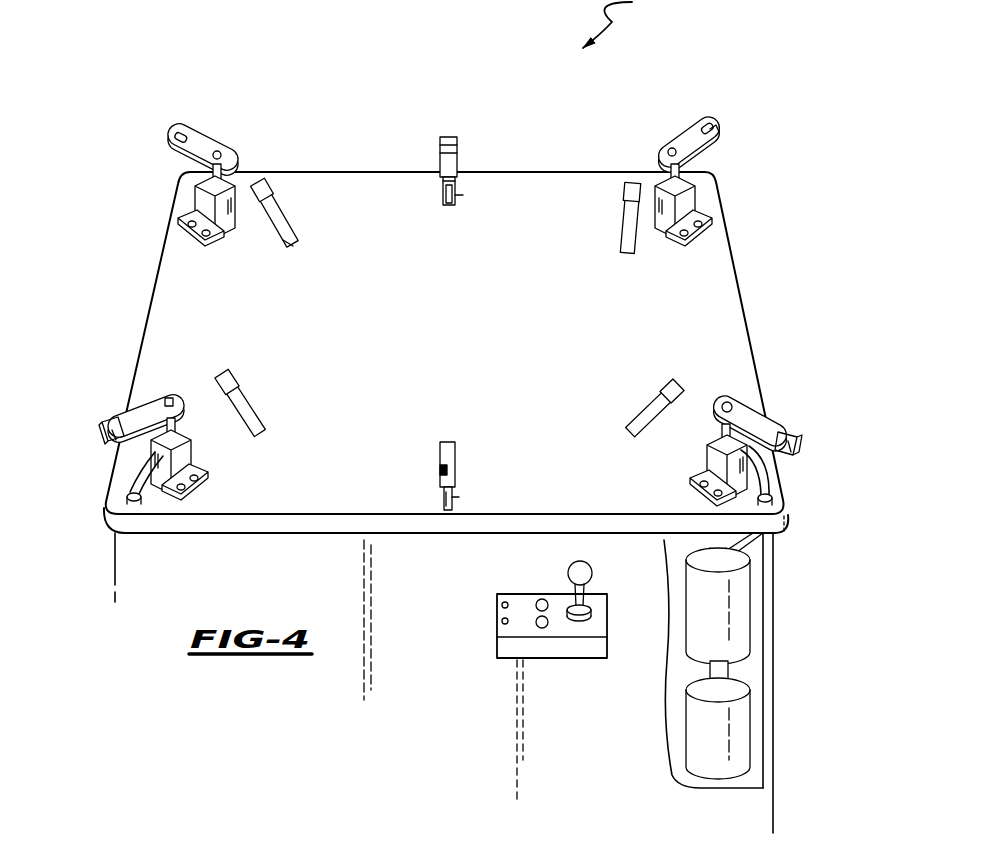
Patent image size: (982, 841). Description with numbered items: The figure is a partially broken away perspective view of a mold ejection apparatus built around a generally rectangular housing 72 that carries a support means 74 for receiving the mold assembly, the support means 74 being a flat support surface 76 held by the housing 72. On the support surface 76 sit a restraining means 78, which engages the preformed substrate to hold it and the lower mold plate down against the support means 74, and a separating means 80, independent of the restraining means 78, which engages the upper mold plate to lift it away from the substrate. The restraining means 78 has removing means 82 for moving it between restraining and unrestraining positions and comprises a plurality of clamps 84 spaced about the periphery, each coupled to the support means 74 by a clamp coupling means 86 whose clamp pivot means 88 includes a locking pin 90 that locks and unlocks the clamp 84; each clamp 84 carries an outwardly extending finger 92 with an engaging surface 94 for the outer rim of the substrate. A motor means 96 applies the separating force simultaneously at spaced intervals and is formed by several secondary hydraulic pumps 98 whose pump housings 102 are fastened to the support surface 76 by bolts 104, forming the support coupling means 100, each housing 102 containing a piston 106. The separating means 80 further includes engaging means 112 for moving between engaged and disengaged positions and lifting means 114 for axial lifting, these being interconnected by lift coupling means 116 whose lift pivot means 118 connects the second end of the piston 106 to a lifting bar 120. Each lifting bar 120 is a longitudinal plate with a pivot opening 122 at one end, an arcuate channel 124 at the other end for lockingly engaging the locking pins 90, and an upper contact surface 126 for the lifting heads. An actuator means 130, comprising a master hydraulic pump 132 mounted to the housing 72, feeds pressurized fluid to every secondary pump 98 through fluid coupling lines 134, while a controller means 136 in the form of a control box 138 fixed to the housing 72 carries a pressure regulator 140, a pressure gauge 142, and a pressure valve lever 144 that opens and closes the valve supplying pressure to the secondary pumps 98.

The housing 72 is at (112, 560).
The support means 74 is at (140, 332).
The support surface 76 is at (452, 370).
The restraining means 78 is at (484, 188).
The separating means 80 is at (729, 161).
The removing means 82 is at (300, 235).
The clamp 84 is at (290, 218).
The clamp coupling means 86 is at (482, 225).
The clamp pivot means 88 is at (451, 206).
The locking pin 90 is at (437, 202).
The finger 92 is at (240, 378).
The engaging surface 94 is at (255, 402).
The motor means 96 is at (700, 467).
The secondary hydraulic pump 98 is at (238, 212).
The support coupling means 100 is at (196, 252).
The pump housing 102 is at (182, 228).
The fastener 104 is at (208, 240).
The piston 106 is at (226, 172).
The engaging means 112 is at (218, 135).
The lifting means 114 is at (183, 165).
The lift coupling means 116 is at (194, 374).
The lift pivot means 118 is at (176, 400).
The lifting bar 120 is at (174, 145).
The pivot opening 122 is at (668, 158).
The arcuate channel 124 is at (188, 132).
The upper contact surface 126 is at (713, 131).
The actuator means 130 is at (764, 683).
The master hydraulic pump 132 is at (742, 618).
The fluid coupling line 134 is at (142, 505).
The controller means 136 is at (530, 652).
The control box 138 is at (530, 642).
The pressure regulator 140 is at (548, 628).
The pressure gauge 142 is at (543, 599).
The pressure valve lever 144 is at (600, 605).